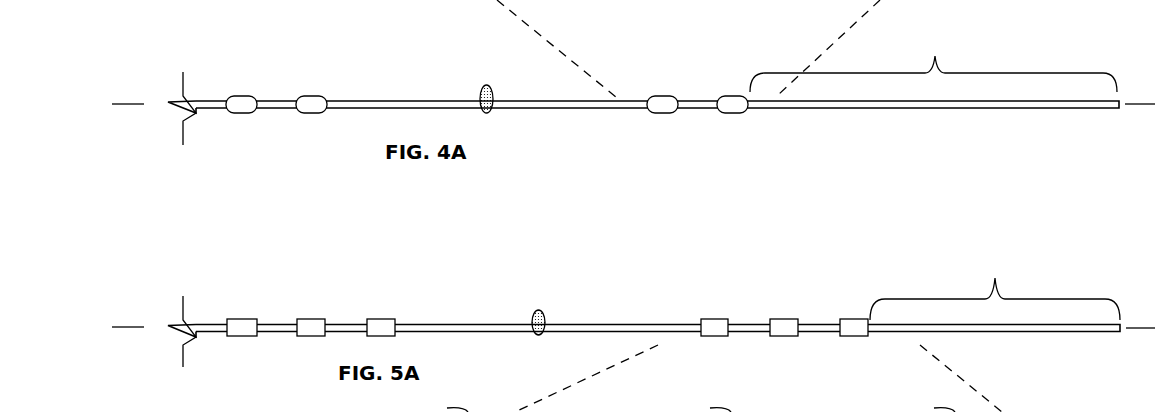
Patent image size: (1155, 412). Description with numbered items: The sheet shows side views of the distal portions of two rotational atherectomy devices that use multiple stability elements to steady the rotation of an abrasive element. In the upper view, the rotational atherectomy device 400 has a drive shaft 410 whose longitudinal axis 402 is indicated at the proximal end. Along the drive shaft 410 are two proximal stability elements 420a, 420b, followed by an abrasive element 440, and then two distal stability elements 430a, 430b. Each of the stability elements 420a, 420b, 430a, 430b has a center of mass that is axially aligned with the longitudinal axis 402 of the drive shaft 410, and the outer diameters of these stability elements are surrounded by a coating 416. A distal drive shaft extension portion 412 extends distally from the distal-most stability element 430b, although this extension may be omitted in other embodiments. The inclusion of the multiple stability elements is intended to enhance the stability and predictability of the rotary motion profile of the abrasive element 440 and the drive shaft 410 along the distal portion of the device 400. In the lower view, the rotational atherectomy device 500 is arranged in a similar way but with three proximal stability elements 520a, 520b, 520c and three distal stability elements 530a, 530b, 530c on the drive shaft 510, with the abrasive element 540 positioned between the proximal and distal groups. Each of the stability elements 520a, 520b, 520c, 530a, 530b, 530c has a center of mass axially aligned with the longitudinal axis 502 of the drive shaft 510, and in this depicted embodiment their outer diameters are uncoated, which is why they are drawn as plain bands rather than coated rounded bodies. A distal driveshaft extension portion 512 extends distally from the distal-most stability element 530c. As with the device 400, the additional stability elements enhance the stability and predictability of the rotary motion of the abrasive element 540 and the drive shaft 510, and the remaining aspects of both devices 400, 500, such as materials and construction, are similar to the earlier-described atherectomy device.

In FIG. 4A, the rotational atherectomy device 400 is at (226, 76).
In FIG. 4A, the longitudinal axis 402 is at (163, 105).
In FIG. 4A, the drive shaft 410 is at (270, 113).
In FIG. 4A, the distal drive shaft extension portion 412 is at (933, 63).
In FIG. 4A, the coating 416 is at (766, 0).
In FIG. 4A, the proximal stability element 420a is at (250, 95).
In FIG. 4A, the proximal stability element 420b is at (311, 96).
In FIG. 4A, the distal stability element 430a is at (672, 96).
In FIG. 4A, the distal stability element 430b is at (733, 96).
In FIG. 4A, the abrasive element 440 is at (479, 84).
In FIG. 5A, the rotational atherectomy device 500 is at (210, 299).
In FIG. 5A, the longitudinal axis 502 is at (163, 328).
In FIG. 5A, the drive shaft 510 is at (266, 336).
In FIG. 5A, the distal driveshaft extension portion 512 is at (995, 289).
In FIG. 5A, the proximal stability element 520a is at (233, 319).
In FIG. 5A, the proximal stability element 520b is at (308, 319).
In FIG. 5A, the proximal stability element 520c is at (383, 319).
In FIG. 5A, the distal stability element 530a is at (710, 319).
In FIG. 5A, the distal stability element 530b is at (782, 319).
In FIG. 5A, the distal stability element 530c is at (856, 319).
In FIG. 5A, the abrasive element 540 is at (538, 309).